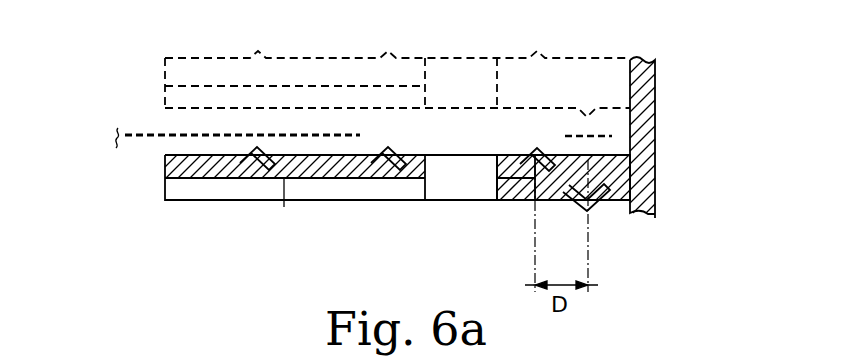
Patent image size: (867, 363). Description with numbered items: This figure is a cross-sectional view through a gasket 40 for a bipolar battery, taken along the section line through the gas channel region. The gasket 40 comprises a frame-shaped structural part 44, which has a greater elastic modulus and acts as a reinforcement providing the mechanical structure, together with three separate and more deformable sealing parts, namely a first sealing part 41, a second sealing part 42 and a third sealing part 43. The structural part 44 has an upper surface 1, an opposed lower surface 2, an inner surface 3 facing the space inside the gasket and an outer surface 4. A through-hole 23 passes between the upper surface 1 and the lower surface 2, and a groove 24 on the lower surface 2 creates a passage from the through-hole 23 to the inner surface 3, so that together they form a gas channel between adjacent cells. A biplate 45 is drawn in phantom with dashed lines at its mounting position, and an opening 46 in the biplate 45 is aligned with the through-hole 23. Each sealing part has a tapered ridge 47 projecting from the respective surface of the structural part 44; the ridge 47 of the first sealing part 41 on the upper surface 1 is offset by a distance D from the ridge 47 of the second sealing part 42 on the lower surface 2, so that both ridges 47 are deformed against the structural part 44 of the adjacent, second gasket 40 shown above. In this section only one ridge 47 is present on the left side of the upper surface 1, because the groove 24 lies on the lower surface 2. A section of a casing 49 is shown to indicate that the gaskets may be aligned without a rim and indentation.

The upper surface 1 is at (298, 146).
The lower surface 2 is at (385, 210).
The inner surface 3 is at (152, 193).
The outer surface 4 is at (648, 175).
The through-hole 23 is at (465, 172).
The groove 24 is at (180, 196).
The gasket 40 is at (201, 78).
The first sealing part 41 is at (284, 205).
The second sealing part 42 is at (600, 203).
The third sealing part 43 is at (390, 150).
The structural part 44 is at (175, 170).
The biplate 45 is at (150, 134).
The opening 46 is at (462, 135).
The tapered ridge 47 is at (380, 152).
The casing 49 is at (668, 82).